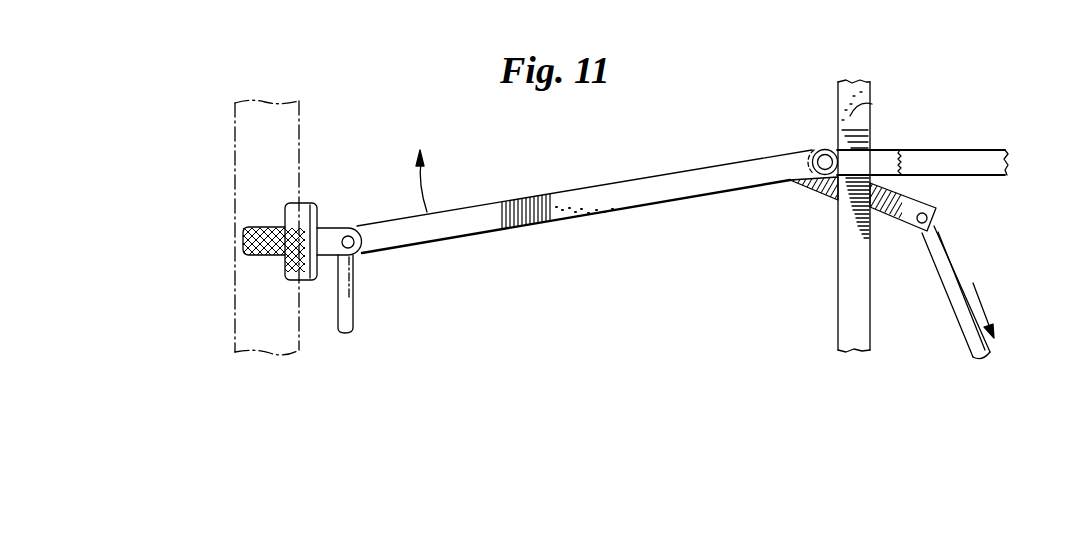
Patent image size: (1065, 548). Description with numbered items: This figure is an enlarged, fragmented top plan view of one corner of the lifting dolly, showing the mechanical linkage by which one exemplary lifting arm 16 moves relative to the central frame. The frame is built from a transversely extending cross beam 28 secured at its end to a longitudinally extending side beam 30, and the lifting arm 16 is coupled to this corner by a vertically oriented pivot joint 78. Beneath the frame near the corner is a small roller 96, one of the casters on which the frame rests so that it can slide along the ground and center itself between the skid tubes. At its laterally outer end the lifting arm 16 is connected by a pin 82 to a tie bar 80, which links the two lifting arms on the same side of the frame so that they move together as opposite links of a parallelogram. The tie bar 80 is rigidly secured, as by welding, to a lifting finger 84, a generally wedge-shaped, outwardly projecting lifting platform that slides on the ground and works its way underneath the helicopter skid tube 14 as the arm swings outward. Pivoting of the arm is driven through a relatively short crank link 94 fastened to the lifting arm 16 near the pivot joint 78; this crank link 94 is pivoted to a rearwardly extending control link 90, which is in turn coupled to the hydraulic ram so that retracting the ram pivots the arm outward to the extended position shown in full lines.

The skid tube 14 is at (301, 141).
The lifting finger 84 is at (256, 228).
The pin 82 is at (350, 237).
The tie bar 80 is at (355, 307).
The lifting arm 16 is at (673, 190).
The pivot joint 78 is at (818, 152).
The cross beam 28 is at (968, 153).
The roller 96 is at (873, 108).
The side beam 30 is at (838, 270).
The crank link 94 is at (900, 218).
The control link 90 is at (948, 270).